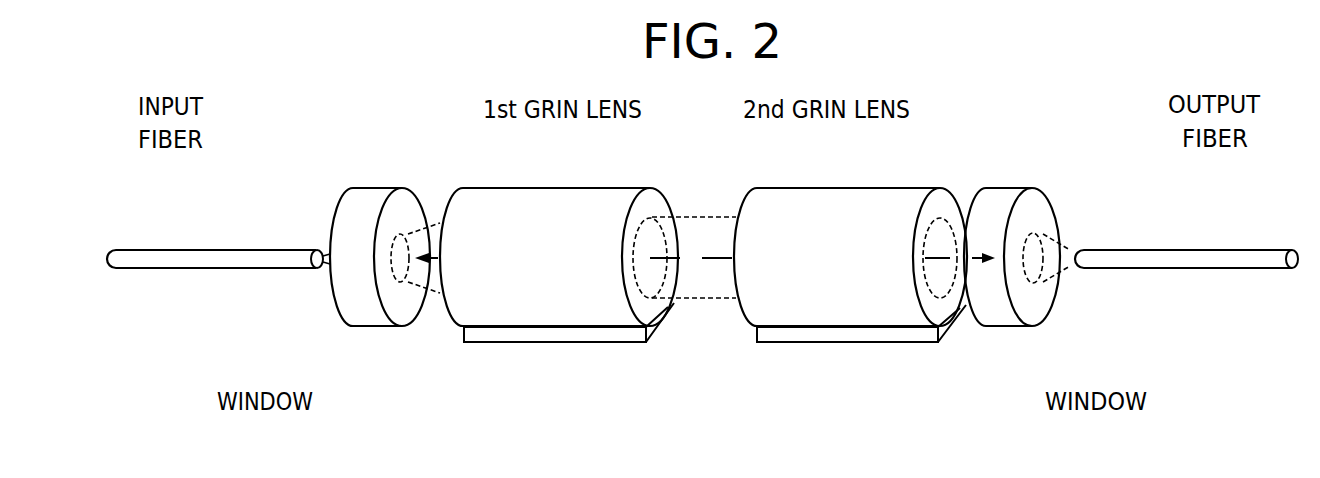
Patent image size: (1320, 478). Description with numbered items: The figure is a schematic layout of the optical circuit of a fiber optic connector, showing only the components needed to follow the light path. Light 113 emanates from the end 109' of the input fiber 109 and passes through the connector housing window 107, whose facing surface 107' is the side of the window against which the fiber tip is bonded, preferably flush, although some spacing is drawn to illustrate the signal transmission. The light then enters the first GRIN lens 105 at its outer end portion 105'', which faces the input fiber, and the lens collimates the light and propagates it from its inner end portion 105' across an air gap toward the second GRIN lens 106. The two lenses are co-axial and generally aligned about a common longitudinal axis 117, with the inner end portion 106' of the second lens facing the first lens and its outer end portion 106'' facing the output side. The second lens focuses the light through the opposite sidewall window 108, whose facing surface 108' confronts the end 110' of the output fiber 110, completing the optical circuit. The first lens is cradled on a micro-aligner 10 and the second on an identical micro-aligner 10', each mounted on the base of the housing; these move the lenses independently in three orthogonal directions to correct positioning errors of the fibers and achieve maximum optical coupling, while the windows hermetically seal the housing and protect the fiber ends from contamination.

The input fiber 109 is at (211, 213).
The end of input fiber 109' is at (303, 219).
The window 107 is at (338, 285).
The facing surface of window 107' is at (295, 257).
The light 113 is at (428, 223).
The first GRIN lens 105 is at (556, 227).
The inner end portion of first lens 105' is at (656, 229).
The outer end portion of first lens 105'' is at (425, 293).
The micro-aligner 10 is at (569, 358).
The common longitudinal axis 117 is at (715, 254).
The second GRIN lens 106 is at (848, 227).
The inner end portion of second lens 106' is at (727, 288).
The outer end portion of second lens 106'' is at (942, 229).
The micro-aligner 10' is at (861, 359).
The window 108 is at (1040, 285).
The facing surface of window 108' is at (1068, 257).
The end of output fiber 110' is at (1083, 237).
The output fiber 110 is at (1186, 213).